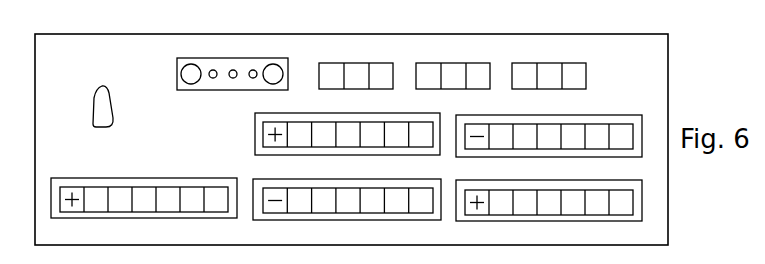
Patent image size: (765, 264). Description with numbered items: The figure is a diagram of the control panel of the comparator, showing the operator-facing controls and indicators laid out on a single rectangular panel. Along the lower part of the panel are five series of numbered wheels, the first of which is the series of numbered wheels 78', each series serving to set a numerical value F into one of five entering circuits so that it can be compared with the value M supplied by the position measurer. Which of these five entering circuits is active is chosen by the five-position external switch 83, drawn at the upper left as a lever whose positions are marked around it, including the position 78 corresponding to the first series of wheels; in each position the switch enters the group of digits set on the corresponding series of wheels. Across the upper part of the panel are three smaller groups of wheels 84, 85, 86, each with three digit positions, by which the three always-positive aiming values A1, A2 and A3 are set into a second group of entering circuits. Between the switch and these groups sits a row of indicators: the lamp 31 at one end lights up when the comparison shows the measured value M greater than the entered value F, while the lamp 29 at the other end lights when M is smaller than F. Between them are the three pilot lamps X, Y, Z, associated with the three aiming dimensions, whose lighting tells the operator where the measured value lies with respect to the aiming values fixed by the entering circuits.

The lamp 29 is at (277, 67).
The lamp 31 is at (190, 67).
The pilot lamp X is at (213, 70).
The pilot lamp Y is at (233, 70).
The pilot lamp Z is at (253, 70).
The joystick direction / display 78 is at (114, 65).
The series of numbered wheels 78' is at (347, 145).
The five-position external switch 83 is at (112, 116).
The group of wheels 84 is at (353, 63).
The group of wheels 85 is at (447, 63).
The group of wheels 86 is at (543, 63).